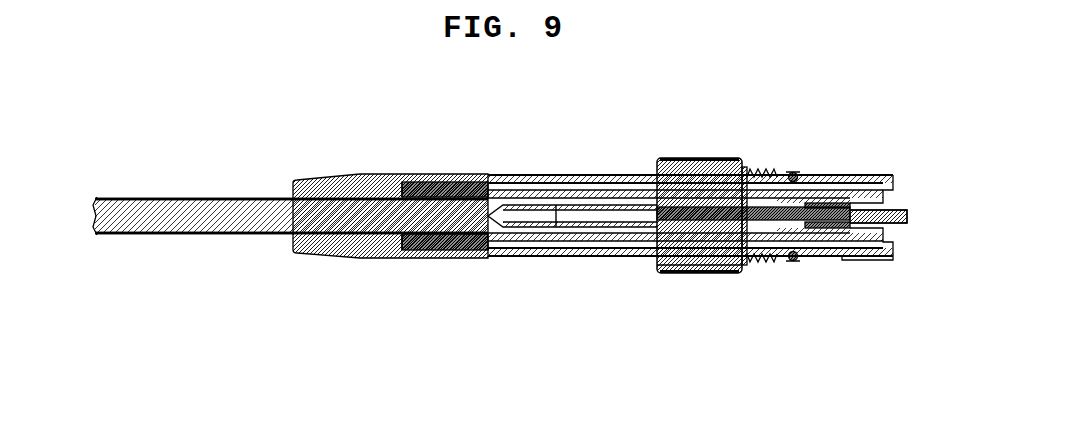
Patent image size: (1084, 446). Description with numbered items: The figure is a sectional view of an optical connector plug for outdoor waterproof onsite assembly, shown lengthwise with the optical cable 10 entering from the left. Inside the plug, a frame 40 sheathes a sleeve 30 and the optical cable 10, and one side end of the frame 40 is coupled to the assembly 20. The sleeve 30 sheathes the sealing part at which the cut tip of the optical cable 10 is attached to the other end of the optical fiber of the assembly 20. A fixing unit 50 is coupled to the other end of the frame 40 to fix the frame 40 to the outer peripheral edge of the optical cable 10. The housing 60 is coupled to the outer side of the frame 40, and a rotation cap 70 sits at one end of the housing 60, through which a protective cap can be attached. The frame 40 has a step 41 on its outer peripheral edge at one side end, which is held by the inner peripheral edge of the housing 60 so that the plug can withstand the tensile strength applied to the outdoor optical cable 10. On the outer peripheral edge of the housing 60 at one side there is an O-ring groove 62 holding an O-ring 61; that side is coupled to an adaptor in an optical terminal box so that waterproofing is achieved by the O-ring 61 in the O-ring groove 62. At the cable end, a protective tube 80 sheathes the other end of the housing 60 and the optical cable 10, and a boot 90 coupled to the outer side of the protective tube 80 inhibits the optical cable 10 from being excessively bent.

The optical cable 10 is at (455, 258).
The assembly 20 is at (845, 176).
The sleeve 30 is at (562, 257).
The frame 40 is at (612, 257).
The step 41 is at (706, 273).
The fixing unit 50 is at (427, 258).
The housing 60 is at (556, 175).
The O-ring 61 is at (795, 173).
The O-ring groove 62 is at (803, 173).
The rotation cap 70 is at (712, 158).
The protective tube 80 is at (240, 197).
The boot 90 is at (375, 175).